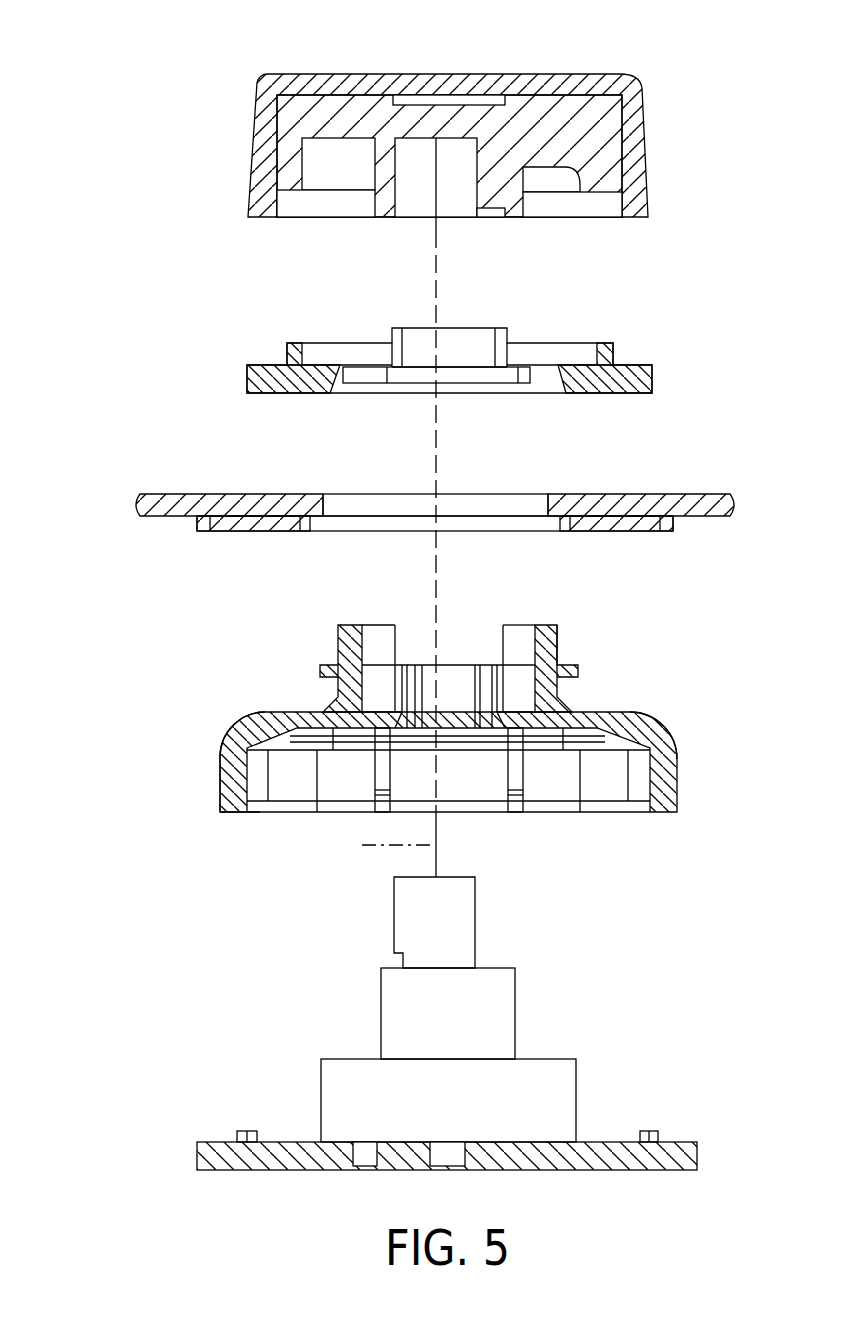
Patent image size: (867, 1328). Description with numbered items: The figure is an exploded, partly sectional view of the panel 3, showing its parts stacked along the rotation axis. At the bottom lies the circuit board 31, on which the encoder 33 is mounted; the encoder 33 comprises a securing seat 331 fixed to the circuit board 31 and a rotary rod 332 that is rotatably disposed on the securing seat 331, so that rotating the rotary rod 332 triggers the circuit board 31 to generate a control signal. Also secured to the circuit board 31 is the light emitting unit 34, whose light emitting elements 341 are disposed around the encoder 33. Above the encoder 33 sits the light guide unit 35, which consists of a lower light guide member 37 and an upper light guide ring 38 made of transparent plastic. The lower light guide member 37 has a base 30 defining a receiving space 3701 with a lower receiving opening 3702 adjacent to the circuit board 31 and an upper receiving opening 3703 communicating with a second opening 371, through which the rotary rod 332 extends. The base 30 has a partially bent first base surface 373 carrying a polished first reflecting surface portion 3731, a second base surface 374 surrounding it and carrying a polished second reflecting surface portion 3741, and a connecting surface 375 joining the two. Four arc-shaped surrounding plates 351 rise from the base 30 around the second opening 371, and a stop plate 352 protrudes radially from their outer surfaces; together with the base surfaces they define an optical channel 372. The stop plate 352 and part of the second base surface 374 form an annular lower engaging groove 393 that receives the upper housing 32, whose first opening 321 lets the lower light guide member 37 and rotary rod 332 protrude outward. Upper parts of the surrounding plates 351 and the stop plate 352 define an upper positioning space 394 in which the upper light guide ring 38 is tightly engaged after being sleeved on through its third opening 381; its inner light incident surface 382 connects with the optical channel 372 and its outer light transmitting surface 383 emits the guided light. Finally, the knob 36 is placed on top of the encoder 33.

The panel 3 is at (146, 98).
The base 30 is at (216, 766).
The circuit board 31 is at (698, 1164).
The upper housing 32 is at (640, 492).
The first opening 321 is at (523, 492).
The encoder 33 is at (556, 1002).
The securing seat 331 is at (576, 1083).
The rotary rod 332 is at (515, 987).
The light emitting unit 34 is at (675, 1126).
The light emitting elements 341 is at (243, 1131).
The light guide unit 35 is at (770, 410).
The knob 36 is at (622, 76).
The lower light guide member 37 is at (684, 760).
The second opening 371 is at (393, 608).
The receiving space 3701 is at (488, 778).
The lower receiving opening 3702 is at (602, 814).
The upper receiving opening 3703 is at (455, 700).
The optical channel 372 is at (662, 799).
The first base surface 373 is at (250, 786).
The first reflecting surface portion 3731 is at (603, 730).
The second base surface 374 is at (221, 746).
The second reflecting surface portion 3741 is at (670, 745).
The connecting surface 375 is at (228, 810).
The upper light guide ring 38 is at (662, 387).
The third opening 381 is at (421, 376).
The light incident surface 382 is at (557, 368).
The light transmitting surface 383 is at (652, 378).
The surrounding plates 351 is at (352, 632).
The stop plate 352 is at (577, 668).
The lower engaging groove 393 is at (325, 700).
The upper positioning space 394 is at (563, 640).